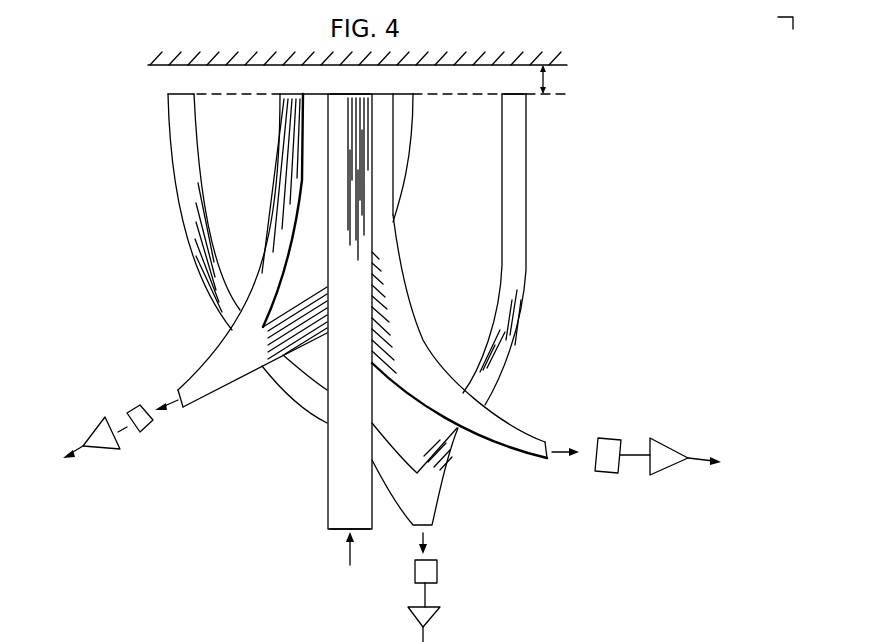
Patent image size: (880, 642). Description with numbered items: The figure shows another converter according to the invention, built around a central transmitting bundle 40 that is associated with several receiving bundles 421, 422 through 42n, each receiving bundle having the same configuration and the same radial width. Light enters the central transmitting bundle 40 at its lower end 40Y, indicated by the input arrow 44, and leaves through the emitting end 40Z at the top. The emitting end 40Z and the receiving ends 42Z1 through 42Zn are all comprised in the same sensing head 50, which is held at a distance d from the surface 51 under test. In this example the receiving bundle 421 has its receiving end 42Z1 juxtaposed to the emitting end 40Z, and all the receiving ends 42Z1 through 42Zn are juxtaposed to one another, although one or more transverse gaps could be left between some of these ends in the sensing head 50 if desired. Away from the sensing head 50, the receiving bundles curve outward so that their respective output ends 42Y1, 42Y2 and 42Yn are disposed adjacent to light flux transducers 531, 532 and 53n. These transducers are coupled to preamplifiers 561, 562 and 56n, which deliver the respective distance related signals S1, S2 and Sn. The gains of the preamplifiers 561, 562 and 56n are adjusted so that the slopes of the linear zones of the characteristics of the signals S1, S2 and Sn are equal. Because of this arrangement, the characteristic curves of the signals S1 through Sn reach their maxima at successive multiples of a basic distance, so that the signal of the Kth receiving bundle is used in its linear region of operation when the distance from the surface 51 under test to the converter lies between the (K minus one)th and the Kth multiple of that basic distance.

The central transmitting bundle 40 is at (345, 449).
The emitting end 40Z is at (353, 93).
The output end of bar 40 40Y is at (338, 531).
The light input to bar 40 44 is at (350, 554).
The sensing head 50 is at (448, 88).
The surface under test 51 is at (183, 66).
The distance d is at (548, 78).
The receiving bundle 42n is at (553, 213).
The receiving bundle 421 is at (383, 190).
The receiving bundle 422 is at (400, 144).
The receiving end 42Z1 is at (318, 94).
The receiving end 42Zn is at (512, 94).
The output end 42Y1 is at (570, 416).
The output end 42Y2 is at (184, 409).
The output end 42Yn is at (431, 527).
The light flux transducer 531 is at (613, 443).
The light flux transducer 532 is at (140, 408).
The light flux transducer 53n is at (437, 570).
The preamplifier 561 is at (668, 462).
The preamplifier 562 is at (106, 449).
The preamplifier 56n is at (438, 607).
The distance related signal S1 is at (702, 455).
The distance related signal S2 is at (50, 467).
The distance related signal Sn is at (425, 633).